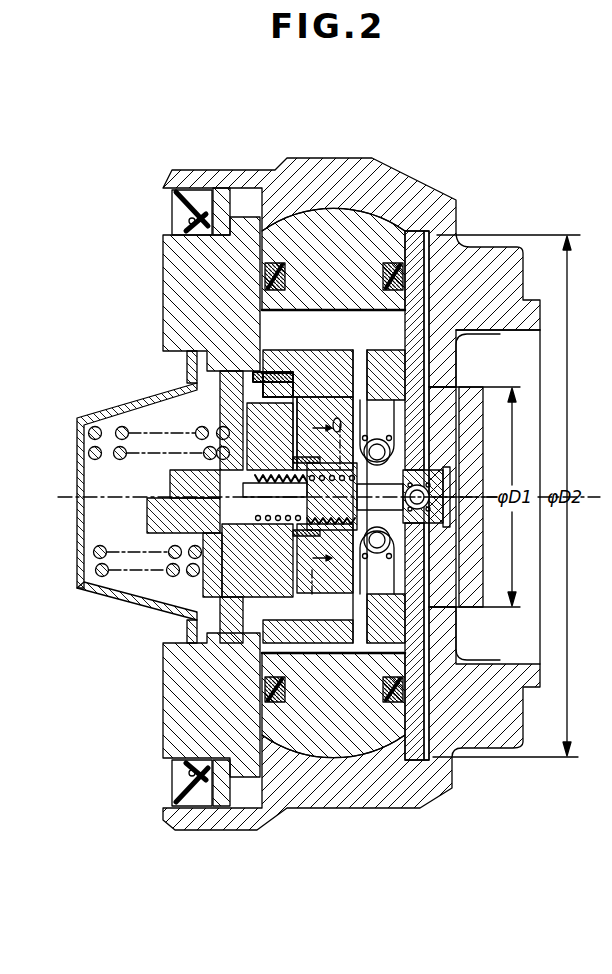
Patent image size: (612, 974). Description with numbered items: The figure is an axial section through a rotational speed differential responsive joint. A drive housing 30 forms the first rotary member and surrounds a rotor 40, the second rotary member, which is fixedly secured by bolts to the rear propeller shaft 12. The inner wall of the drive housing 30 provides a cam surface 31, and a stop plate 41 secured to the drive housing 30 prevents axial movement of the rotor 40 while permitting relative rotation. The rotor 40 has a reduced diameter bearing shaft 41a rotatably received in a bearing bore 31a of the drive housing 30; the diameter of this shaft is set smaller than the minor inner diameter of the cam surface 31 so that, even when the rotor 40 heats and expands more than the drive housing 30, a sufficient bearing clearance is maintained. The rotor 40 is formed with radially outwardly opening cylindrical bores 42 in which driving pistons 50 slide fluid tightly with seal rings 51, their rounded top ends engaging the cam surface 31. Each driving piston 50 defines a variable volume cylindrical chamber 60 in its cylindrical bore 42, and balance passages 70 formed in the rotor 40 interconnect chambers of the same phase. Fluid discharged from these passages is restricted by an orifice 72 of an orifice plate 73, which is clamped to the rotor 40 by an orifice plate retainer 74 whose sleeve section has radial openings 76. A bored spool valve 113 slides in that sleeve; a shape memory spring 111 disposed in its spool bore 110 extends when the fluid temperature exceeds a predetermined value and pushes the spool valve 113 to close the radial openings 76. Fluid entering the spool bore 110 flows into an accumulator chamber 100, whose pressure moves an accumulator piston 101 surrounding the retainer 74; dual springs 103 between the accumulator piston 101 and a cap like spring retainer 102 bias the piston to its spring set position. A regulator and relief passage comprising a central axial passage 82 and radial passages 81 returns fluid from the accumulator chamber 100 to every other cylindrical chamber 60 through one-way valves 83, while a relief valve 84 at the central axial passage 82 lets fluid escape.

The rear propeller shaft 12 is at (338, 433).
The drive housing 30 is at (388, 173).
The cam surface 31 is at (411, 232).
The bearing bore 31a is at (442, 640).
The rotor 40 is at (163, 252).
The stop plate 41 is at (222, 188).
The reduced diameter bearing shaft 41a is at (478, 471).
The cylindrical bores 42 is at (463, 252).
The driving pistons 50 is at (330, 216).
The seal rings 51 is at (272, 262).
The cylindrical chambers 60 is at (427, 222).
The balance passages 70 is at (333, 415).
The orifice 72 is at (290, 447).
The orifice plate 73 is at (295, 398).
The orifice plate retainer 74 is at (283, 372).
The radial openings 76 is at (300, 462).
The radial passages 81 is at (405, 430).
The central axial passage 82 is at (383, 511).
The one-way valve 83 is at (386, 570).
The relief valve 84 is at (422, 485).
The accumulator chamber 100 is at (228, 530).
The accumulator piston 101 is at (232, 386).
The spring retainer 102 is at (97, 593).
The dual springs 103 is at (91, 570).
The spool bore 110 is at (270, 492).
The shape memory spring 111 is at (228, 525).
The bored spool valve 113 is at (300, 532).